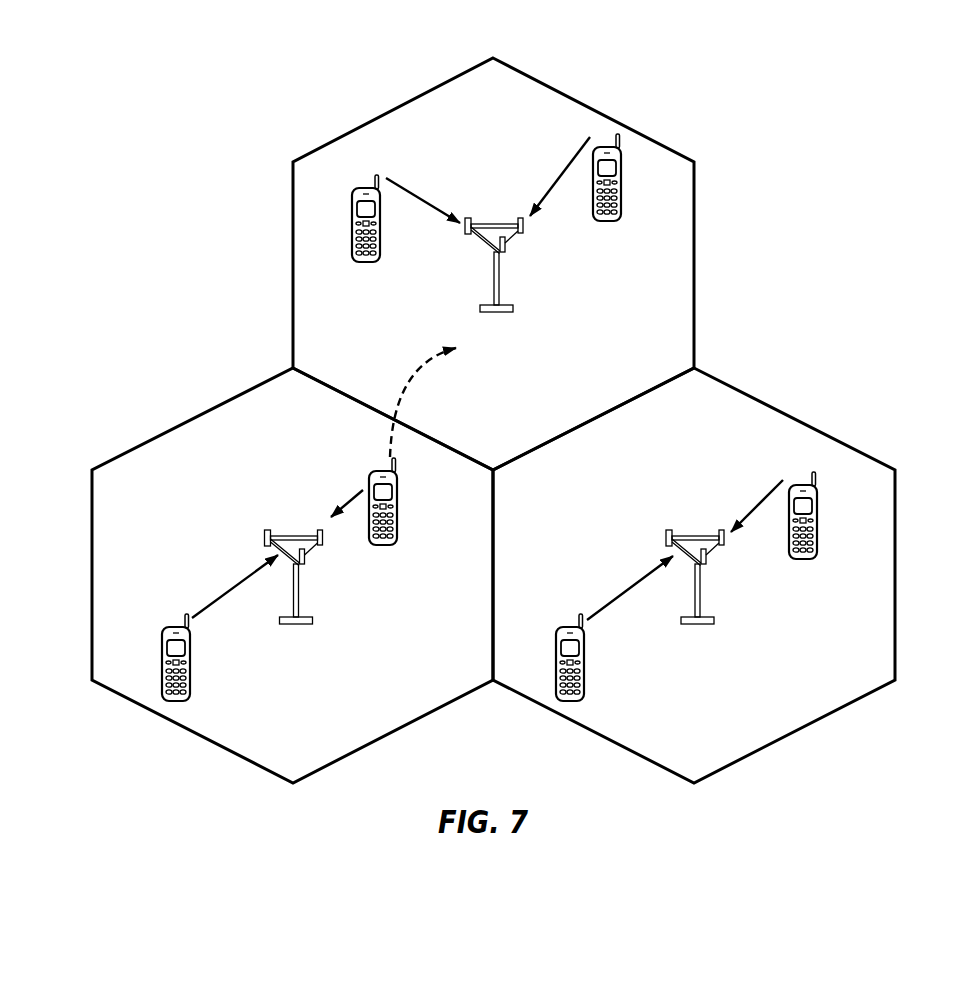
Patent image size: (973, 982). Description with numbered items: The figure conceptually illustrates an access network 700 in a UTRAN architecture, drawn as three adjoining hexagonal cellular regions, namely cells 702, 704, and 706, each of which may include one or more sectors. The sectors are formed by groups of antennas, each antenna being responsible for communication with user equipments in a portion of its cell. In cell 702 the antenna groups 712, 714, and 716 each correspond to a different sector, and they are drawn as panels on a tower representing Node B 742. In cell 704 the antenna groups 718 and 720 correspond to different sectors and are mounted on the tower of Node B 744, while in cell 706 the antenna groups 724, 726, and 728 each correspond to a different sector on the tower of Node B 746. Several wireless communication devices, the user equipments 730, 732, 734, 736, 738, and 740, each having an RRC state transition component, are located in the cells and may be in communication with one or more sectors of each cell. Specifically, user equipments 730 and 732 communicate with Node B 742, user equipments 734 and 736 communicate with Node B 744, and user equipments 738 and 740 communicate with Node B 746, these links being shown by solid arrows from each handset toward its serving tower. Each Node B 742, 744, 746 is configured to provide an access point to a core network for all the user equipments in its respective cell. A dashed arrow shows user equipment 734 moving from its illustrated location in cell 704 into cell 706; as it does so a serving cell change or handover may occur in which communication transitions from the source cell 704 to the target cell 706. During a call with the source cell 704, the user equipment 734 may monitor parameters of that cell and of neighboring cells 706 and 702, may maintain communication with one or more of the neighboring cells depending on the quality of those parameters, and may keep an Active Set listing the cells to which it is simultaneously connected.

The access network 700 is at (808, 86).
The cell 702 is at (795, 419).
The cell 704 is at (170, 431).
The cell 706 is at (578, 94).
The antenna group 712 is at (665, 531).
The antenna group 714 is at (705, 565).
The antenna group 716 is at (725, 546).
The antenna group 718 is at (303, 565).
The antenna group 720 is at (322, 546).
The antenna group 724 is at (464, 237).
The antenna group 726 is at (504, 253).
The antenna group 728 is at (524, 234).
The user equipment 730 is at (810, 487).
The user equipment 732 is at (264, 531).
The user equipment 734 is at (397, 494).
The user equipment 736 is at (162, 653).
The user equipment 738 is at (367, 263).
The user equipment 740 is at (612, 221).
The Node B 742 is at (695, 556).
The Node B 744 is at (395, 594).
The Node B 746 is at (495, 245).